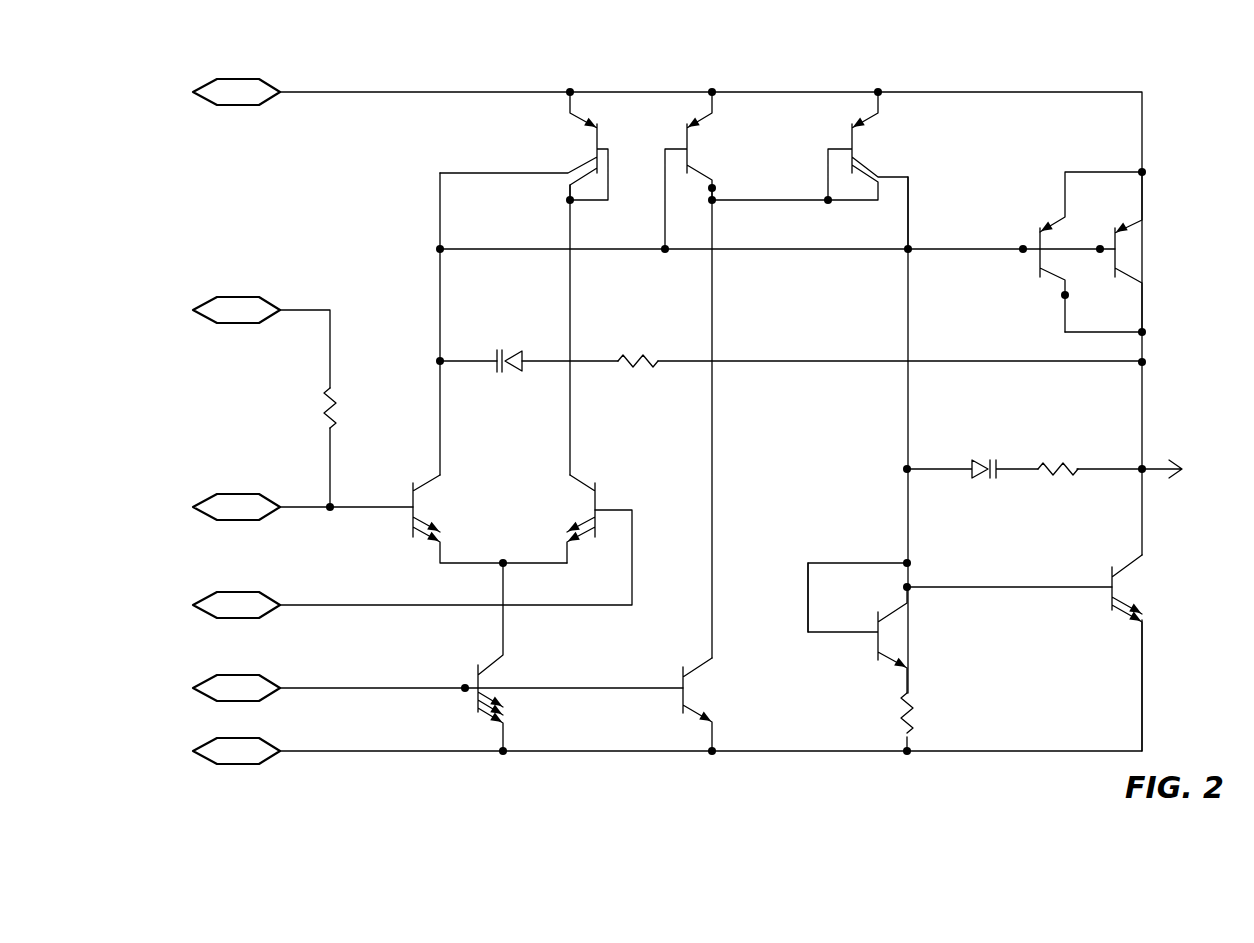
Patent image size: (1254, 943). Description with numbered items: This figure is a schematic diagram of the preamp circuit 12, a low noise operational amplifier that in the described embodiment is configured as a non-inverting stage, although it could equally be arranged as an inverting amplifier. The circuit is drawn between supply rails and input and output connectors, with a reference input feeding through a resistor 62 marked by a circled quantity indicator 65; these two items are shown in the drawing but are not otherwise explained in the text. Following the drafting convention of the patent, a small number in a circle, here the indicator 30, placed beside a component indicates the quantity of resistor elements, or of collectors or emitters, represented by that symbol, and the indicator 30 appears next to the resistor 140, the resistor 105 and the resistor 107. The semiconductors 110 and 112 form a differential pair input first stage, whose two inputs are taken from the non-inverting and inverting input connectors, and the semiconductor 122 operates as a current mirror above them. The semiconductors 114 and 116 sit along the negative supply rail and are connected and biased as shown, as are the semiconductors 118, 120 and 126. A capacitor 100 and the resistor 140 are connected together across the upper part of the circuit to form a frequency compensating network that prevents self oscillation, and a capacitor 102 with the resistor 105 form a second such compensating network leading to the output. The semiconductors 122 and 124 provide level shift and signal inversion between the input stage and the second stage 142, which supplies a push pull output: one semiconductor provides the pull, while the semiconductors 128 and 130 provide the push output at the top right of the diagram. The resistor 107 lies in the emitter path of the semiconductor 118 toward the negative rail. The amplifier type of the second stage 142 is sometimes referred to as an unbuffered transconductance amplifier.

The preamp circuit 12 is at (250, 169).
The circled quantity indicator 30 is at (854, 530).
The resistor 62 is at (333, 410).
The resistor 65 is at (331, 408).
The capacitor 100 is at (508, 374).
The capacitor 102 is at (980, 480).
The resistor 105 is at (1068, 476).
The resistor 107 is at (895, 716).
The semiconductor 110 is at (430, 480).
The semiconductor 112 is at (583, 480).
The semiconductor 114 is at (495, 660).
The semiconductor 116 is at (714, 672).
The semiconductor 118 is at (902, 617).
The semiconductor 120 is at (1120, 616).
The semiconductor 122 is at (570, 118).
The semiconductor 124 is at (712, 118).
The semiconductor 126 is at (878, 118).
The semiconductor 128 is at (1050, 280).
The semiconductor 130 is at (1138, 216).
The resistor 140 is at (630, 355).
The second stage 142 is at (822, 420).